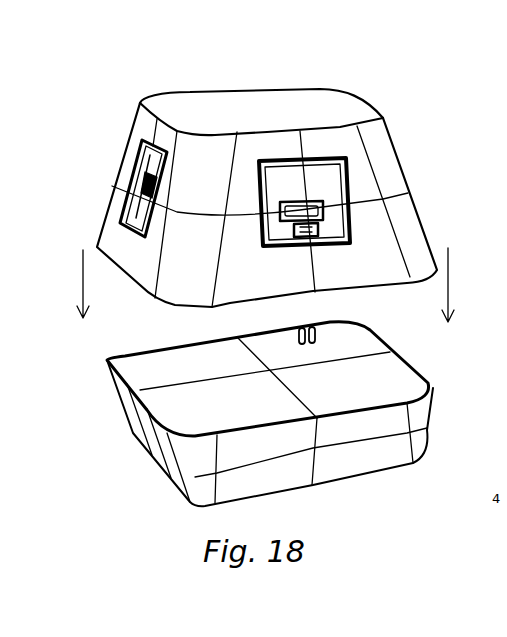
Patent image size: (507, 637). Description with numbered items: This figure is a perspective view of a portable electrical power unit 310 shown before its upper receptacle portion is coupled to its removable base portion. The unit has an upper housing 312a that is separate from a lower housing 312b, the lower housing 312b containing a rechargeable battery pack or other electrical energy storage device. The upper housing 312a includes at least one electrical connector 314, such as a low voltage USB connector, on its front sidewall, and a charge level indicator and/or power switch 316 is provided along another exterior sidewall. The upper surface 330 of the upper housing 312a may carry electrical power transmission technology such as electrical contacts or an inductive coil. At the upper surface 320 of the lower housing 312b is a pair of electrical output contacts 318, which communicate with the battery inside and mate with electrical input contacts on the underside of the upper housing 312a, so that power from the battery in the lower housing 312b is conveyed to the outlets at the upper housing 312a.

The portable electrical power unit 310 is at (461, 116).
The upper housing 312a is at (133, 157).
The lower housing 312b is at (121, 412).
The electrical connector 314 is at (318, 180).
The charge level indicator and/or power switch 316 is at (135, 205).
The electrical output contacts 318 is at (328, 343).
The upper surface of lower housing 320 is at (153, 362).
The upper surface of upper housing 330 is at (276, 110).